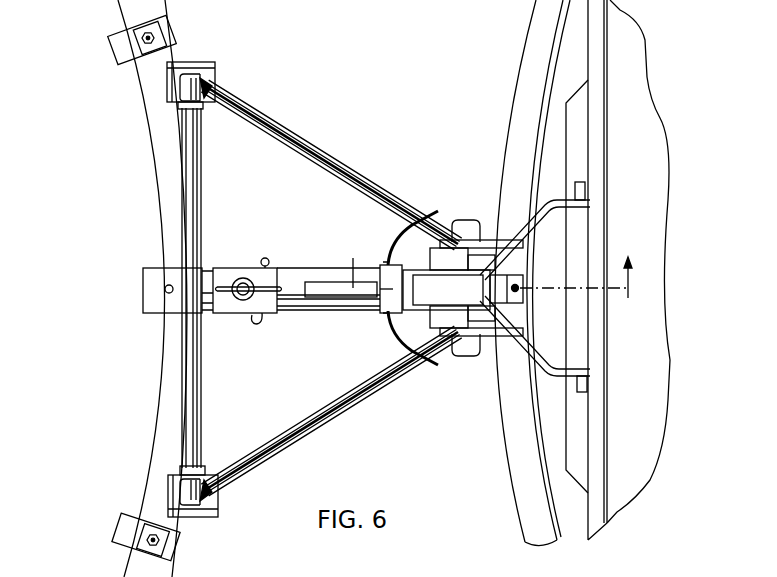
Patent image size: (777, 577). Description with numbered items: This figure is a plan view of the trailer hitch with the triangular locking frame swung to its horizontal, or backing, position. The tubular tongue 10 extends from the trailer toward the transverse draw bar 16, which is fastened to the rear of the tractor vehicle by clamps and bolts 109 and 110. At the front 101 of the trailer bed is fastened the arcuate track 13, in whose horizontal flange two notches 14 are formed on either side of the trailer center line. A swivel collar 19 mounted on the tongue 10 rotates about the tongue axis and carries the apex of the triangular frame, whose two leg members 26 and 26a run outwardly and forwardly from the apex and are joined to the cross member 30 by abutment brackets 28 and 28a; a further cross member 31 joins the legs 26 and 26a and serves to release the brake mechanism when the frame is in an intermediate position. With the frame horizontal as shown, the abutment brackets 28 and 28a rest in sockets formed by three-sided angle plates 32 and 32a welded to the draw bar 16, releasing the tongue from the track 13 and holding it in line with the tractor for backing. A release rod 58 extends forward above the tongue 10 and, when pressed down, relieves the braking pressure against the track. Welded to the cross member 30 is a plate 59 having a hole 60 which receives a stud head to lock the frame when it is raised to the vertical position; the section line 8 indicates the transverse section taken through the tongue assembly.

The section line 8- 8 is at (490, 264).
The tubular tongue 10 is at (341, 303).
The arcuate track 13 is at (520, 432).
The notches 14 is at (505, 235).
The transverse draw bar 16 is at (160, 382).
The swivel collar 19 is at (442, 262).
The leg member 26 is at (312, 153).
The leg member 26a is at (327, 421).
The abutment bracket 28 is at (217, 66).
The abutment bracket 28a is at (210, 508).
The cross member 30 is at (205, 183).
The cross member 31 is at (399, 333).
The three-sided angle plate 32 is at (166, 78).
The three-sided angle plate 32a is at (168, 490).
The release rod 58 is at (323, 285).
The plate 59 is at (155, 299).
The hole 60 is at (166, 287).
The front of the trailer bed 101 is at (583, 421).
The clamps and bolts 109 is at (110, 40).
The clamps and bolts 110 is at (120, 535).